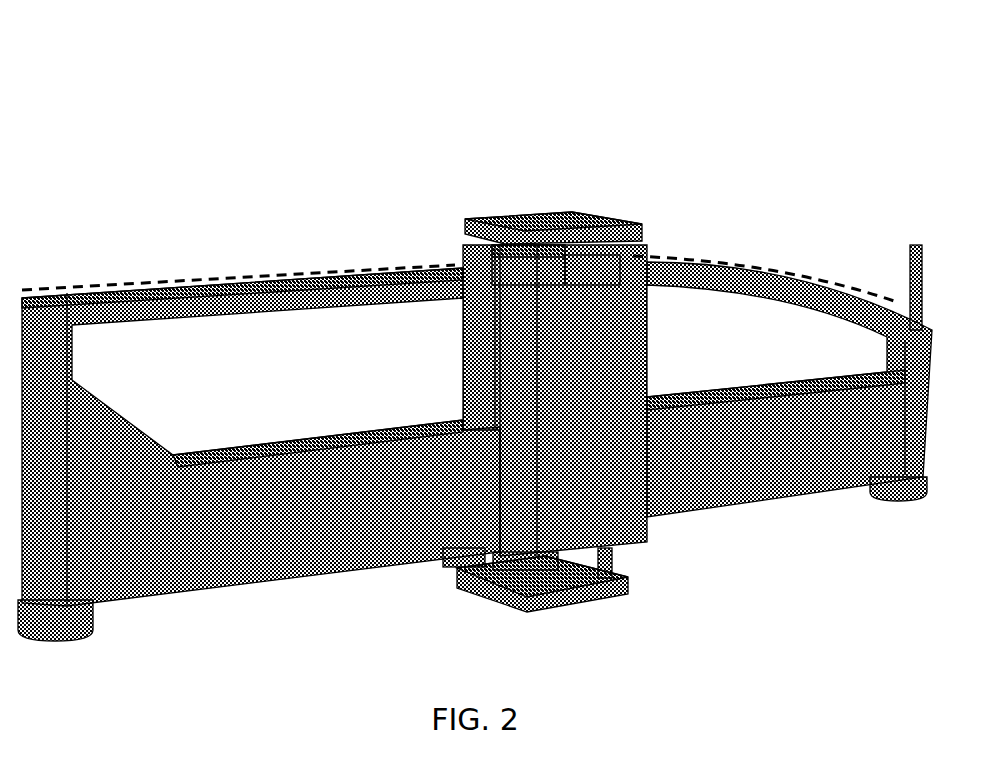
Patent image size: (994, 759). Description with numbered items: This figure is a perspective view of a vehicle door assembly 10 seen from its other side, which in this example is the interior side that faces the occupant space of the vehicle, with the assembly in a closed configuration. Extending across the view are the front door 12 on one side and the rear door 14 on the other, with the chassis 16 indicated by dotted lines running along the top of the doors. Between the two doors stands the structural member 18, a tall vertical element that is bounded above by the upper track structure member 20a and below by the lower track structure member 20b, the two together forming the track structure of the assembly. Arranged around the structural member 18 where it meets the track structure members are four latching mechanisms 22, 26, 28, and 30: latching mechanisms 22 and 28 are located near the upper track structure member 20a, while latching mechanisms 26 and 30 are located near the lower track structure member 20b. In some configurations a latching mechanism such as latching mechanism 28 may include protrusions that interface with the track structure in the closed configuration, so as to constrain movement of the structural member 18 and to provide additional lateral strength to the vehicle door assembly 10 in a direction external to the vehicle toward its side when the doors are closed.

The vehicle door assembly 10 is at (472, 114).
The front door 12 is at (760, 502).
The rear door 14 is at (258, 577).
The chassis 16 is at (762, 268).
The structural member 18 is at (648, 340).
The upper track structure member 20a is at (583, 218).
The lower track structure member 20b is at (582, 605).
The latching mechanism 22 is at (458, 262).
The latching mechanism 26 is at (443, 568).
The latching mechanism 28 is at (603, 275).
The latching mechanism 30 is at (607, 570).